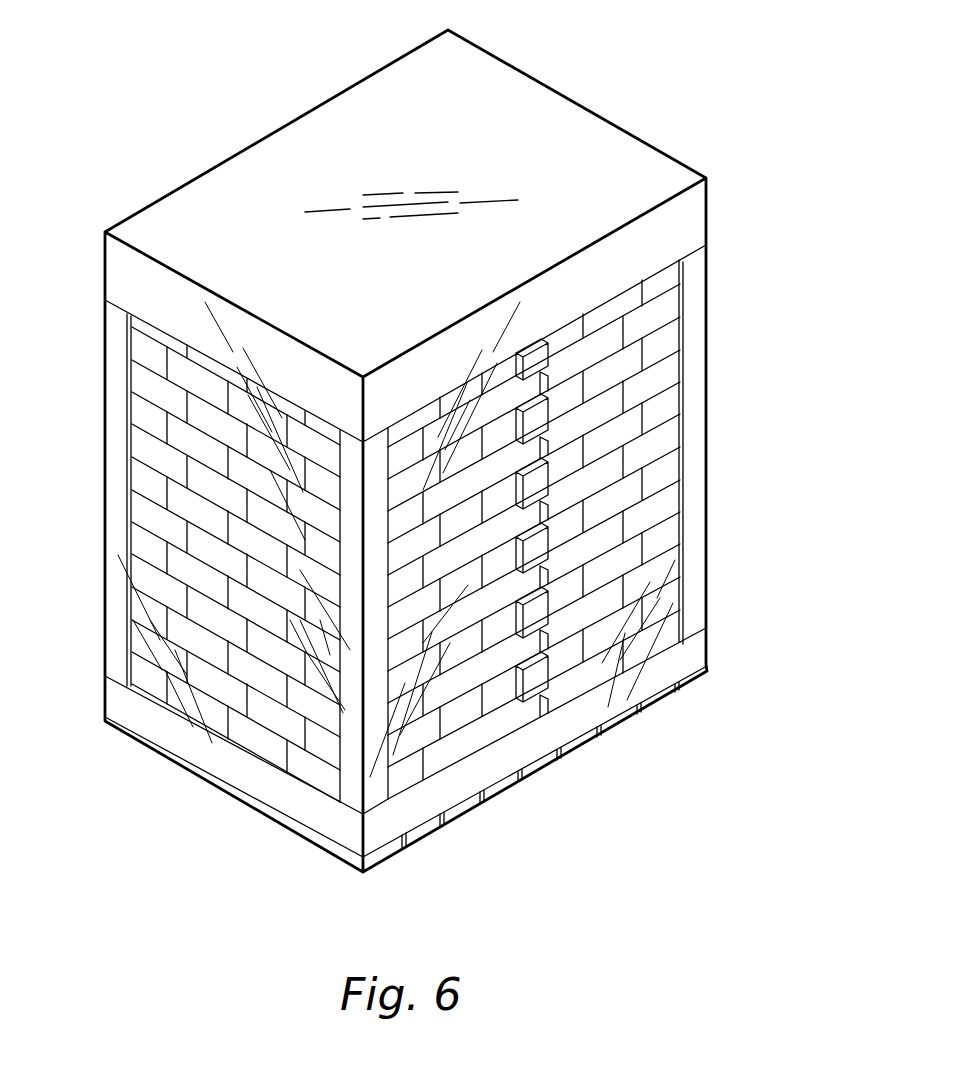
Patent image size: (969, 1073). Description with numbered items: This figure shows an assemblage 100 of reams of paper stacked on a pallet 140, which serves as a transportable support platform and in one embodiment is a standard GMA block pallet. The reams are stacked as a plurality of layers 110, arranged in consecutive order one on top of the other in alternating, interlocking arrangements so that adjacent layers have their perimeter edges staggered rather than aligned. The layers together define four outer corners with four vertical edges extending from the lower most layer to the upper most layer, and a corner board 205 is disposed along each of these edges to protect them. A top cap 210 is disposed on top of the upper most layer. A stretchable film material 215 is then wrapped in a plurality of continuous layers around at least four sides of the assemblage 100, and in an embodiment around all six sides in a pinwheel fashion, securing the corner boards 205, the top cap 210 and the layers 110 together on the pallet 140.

The assemblage 100 is at (697, 123).
The plurality of layers 110 is at (87, 285).
The pallet 140 is at (198, 758).
The corner board 205 is at (698, 340).
The top cap 210 is at (220, 183).
The stretchable film material 215 is at (571, 462).